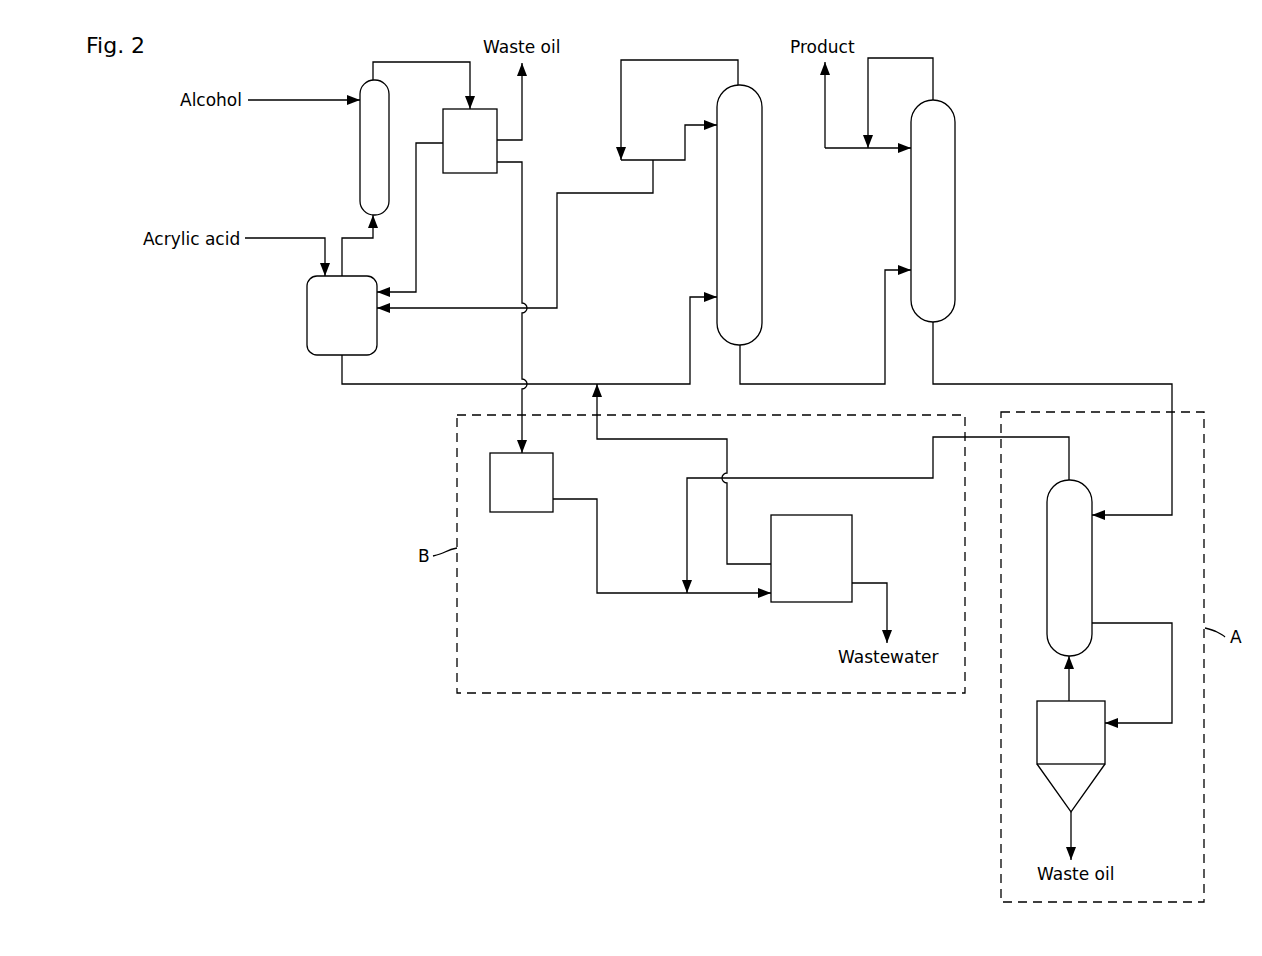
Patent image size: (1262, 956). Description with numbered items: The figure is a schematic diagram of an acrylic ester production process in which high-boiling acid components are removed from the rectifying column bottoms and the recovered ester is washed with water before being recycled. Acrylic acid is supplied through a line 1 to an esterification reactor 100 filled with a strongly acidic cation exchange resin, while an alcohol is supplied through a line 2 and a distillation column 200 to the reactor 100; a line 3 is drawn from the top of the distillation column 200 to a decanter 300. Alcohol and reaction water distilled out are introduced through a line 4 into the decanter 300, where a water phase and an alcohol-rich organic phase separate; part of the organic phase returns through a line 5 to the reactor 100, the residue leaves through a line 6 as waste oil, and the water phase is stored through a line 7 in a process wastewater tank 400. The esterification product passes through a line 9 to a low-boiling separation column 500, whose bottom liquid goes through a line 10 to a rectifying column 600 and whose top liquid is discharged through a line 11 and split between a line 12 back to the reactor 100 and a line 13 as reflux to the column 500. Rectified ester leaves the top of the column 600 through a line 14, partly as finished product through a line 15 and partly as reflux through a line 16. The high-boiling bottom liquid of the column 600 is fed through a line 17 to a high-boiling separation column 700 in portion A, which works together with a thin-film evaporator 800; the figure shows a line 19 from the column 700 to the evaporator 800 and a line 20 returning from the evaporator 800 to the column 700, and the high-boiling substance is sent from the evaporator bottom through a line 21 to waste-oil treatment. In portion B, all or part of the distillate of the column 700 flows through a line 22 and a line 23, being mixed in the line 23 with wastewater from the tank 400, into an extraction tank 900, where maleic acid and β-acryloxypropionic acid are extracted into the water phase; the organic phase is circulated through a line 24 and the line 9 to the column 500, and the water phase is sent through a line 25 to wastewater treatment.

The line 1 is at (281, 238).
The line 2 is at (296, 100).
The distillation column overhead line 3 is at (418, 62).
The line 4 is at (359, 238).
The line 5 is at (416, 258).
The line 6 is at (522, 105).
The line 7 is at (522, 258).
The line 9 is at (431, 384).
The line 10 is at (808, 384).
The line 11 is at (674, 60).
The line 12 is at (600, 193).
The line 13 is at (672, 160).
The line 14 is at (896, 58).
The line 15 is at (825, 105).
The line 16 is at (881, 148).
The line 17 is at (1050, 384).
The high-boiling separation column bottoms line 19 is at (1172, 677).
The thin-film evaporator vapor return line 20 is at (1069, 683).
The line 21 is at (1071, 830).
The line 22 is at (811, 478).
The line 23 is at (637, 593).
The line 24 is at (650, 439).
The line 25 is at (887, 610).
The esterification reactor 100 is at (307, 315).
The distillation column 200 is at (360, 118).
The decanter 300 is at (470, 173).
The process wastewater tank 400 is at (521, 512).
The low-boiling separation column 500 is at (762, 205).
The rectifying column 600 is at (955, 205).
The high-boiling separation column 700 is at (1092, 536).
The thin-film evaporator 800 is at (1105, 745).
The extraction tank 900 is at (788, 602).